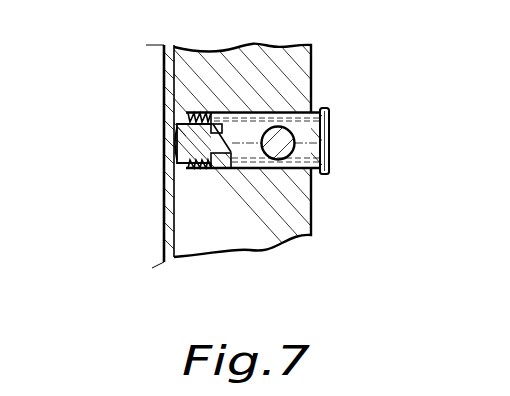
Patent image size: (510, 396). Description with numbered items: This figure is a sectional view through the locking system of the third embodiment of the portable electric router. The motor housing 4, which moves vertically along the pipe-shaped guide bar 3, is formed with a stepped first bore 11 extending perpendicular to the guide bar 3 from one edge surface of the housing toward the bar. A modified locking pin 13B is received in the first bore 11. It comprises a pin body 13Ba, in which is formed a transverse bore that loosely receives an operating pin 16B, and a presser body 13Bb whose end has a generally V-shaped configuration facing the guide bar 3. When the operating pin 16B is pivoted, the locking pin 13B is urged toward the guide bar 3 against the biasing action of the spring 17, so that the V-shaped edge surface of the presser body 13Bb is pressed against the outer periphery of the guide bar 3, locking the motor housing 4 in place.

The guide bar 3 is at (166, 213).
The motor housing 4 is at (312, 54).
The first bore 11 is at (286, 108).
The locking pin 13B is at (311, 193).
The pin body 13Ba is at (311, 132).
The presser body 13Bb is at (176, 142).
The operating pin 16B is at (273, 147).
The spring 17 is at (217, 172).